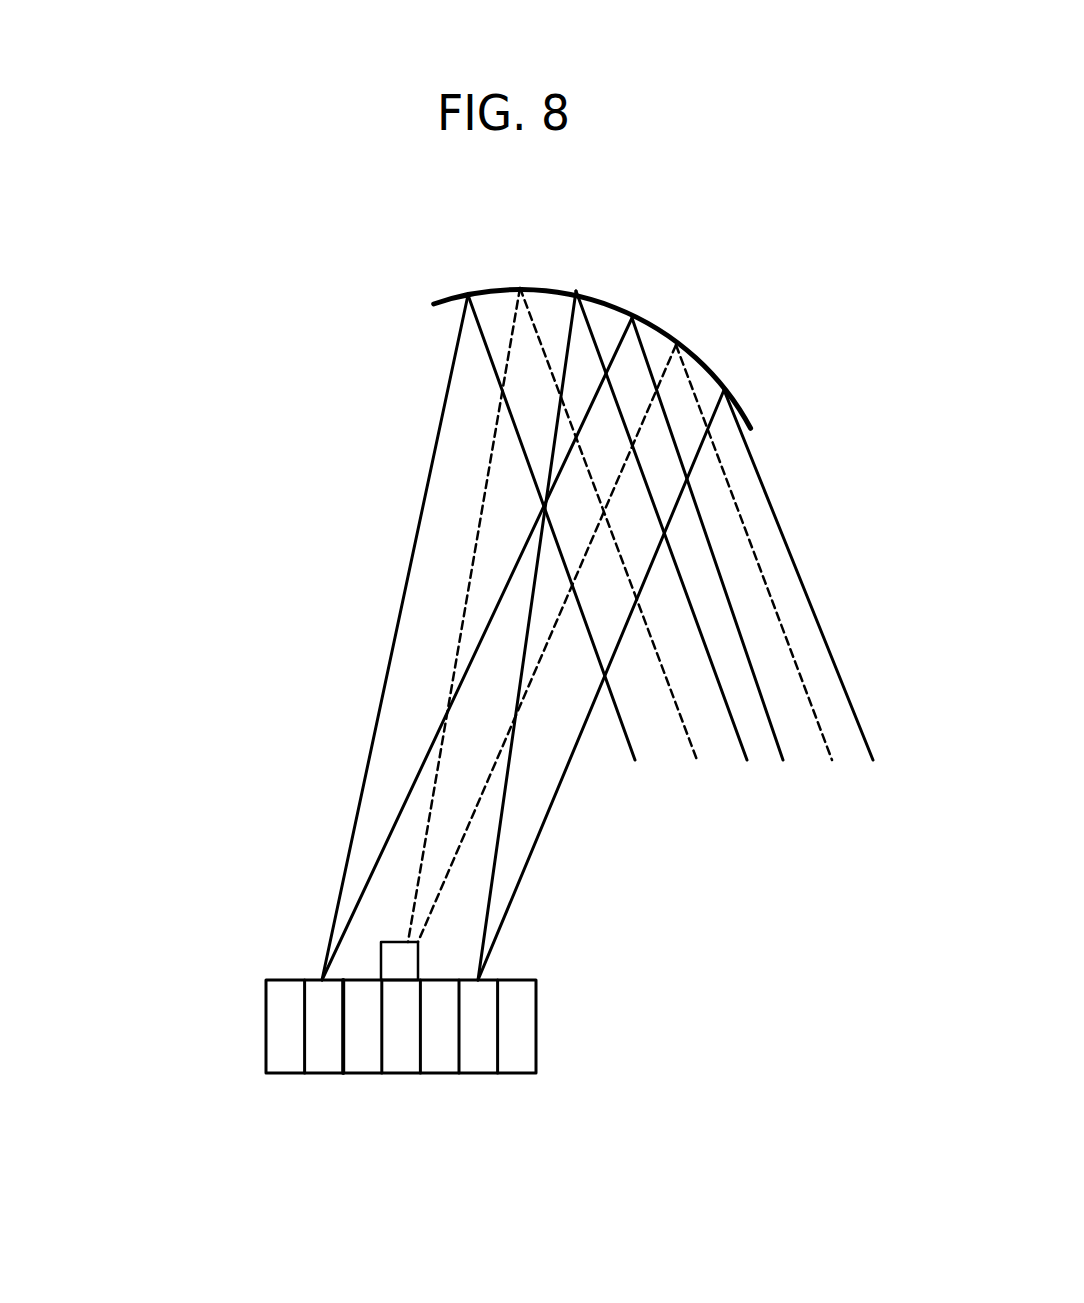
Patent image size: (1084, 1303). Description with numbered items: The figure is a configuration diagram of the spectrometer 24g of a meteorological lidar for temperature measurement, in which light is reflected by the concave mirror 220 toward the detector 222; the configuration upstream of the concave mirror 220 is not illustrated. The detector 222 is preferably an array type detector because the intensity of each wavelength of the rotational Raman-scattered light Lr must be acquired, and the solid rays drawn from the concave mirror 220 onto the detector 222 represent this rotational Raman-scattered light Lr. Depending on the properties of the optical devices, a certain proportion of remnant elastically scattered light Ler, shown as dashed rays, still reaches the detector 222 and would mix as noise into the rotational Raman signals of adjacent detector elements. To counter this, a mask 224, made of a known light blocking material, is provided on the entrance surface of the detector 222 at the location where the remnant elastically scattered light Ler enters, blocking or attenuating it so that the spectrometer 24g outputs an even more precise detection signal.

The concave mirror 220 is at (608, 312).
The detector 222 is at (370, 1075).
The mask 224 is at (381, 942).
The rotational Raman-scattered light Lr is at (778, 518).
The remnant elastically scattered light Ler is at (774, 600).
The spectrometer 24g is at (705, 1157).